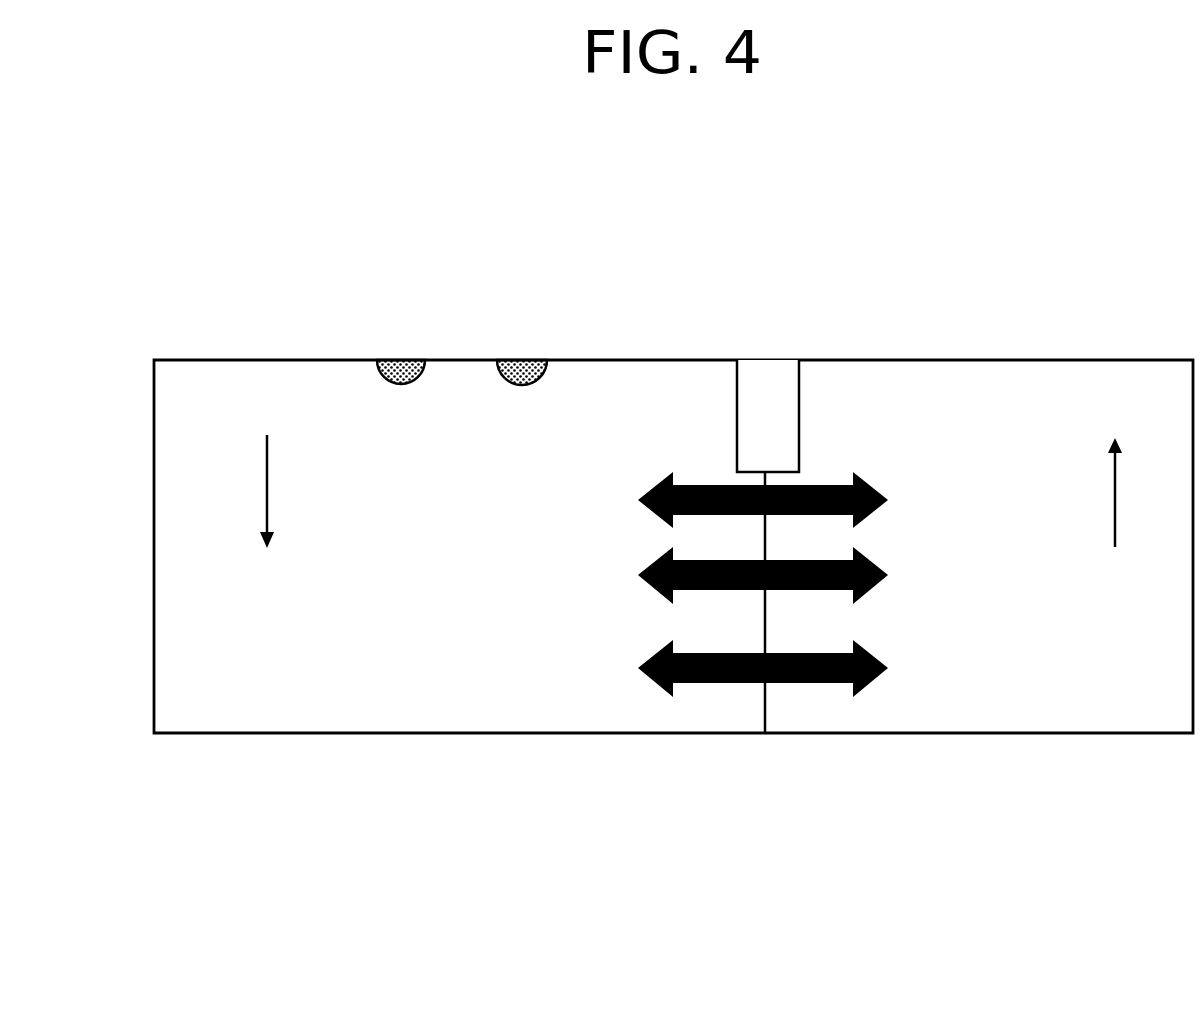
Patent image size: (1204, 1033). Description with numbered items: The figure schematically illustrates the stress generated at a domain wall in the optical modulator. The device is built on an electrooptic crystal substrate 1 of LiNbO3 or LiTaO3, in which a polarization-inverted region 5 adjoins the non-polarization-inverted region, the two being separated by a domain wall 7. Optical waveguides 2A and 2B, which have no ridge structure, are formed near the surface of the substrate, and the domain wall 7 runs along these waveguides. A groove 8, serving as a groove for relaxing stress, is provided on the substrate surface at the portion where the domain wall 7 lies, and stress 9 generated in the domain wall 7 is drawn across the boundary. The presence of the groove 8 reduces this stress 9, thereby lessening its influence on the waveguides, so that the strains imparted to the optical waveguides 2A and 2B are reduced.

The electrooptic crystal substrate 1 is at (1091, 635).
The polarization-inverted region 5 is at (553, 628).
The domain wall 7 is at (762, 753).
The groove 8 is at (767, 398).
The stress 9 is at (670, 693).
The optical waveguide 2A is at (510, 363).
The optical waveguide 2B is at (410, 367).